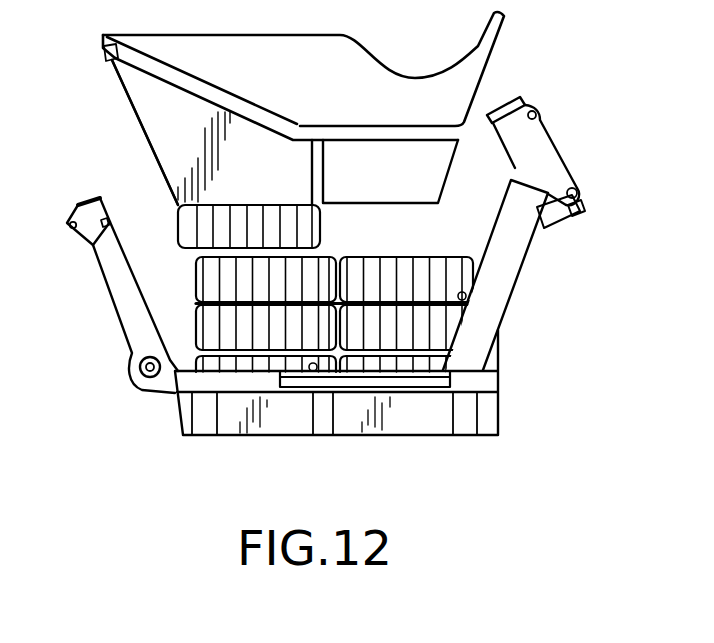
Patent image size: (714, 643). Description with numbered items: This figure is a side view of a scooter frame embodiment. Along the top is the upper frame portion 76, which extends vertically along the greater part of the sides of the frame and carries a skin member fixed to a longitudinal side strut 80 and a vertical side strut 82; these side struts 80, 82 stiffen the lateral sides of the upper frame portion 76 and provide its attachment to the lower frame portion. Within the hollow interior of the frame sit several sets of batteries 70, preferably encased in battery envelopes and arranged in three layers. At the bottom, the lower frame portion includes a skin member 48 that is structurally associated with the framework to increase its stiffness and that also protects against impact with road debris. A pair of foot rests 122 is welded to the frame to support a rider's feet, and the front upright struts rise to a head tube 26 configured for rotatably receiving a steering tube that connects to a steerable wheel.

The upper frame portion 76 is at (333, 71).
The longitudinal side strut 80 is at (172, 84).
The vertical side strut 82 is at (318, 167).
The batteries 70 is at (385, 258).
The foot rests 122 is at (333, 376).
The skin member 48 is at (413, 418).
The head tube 26 is at (530, 146).